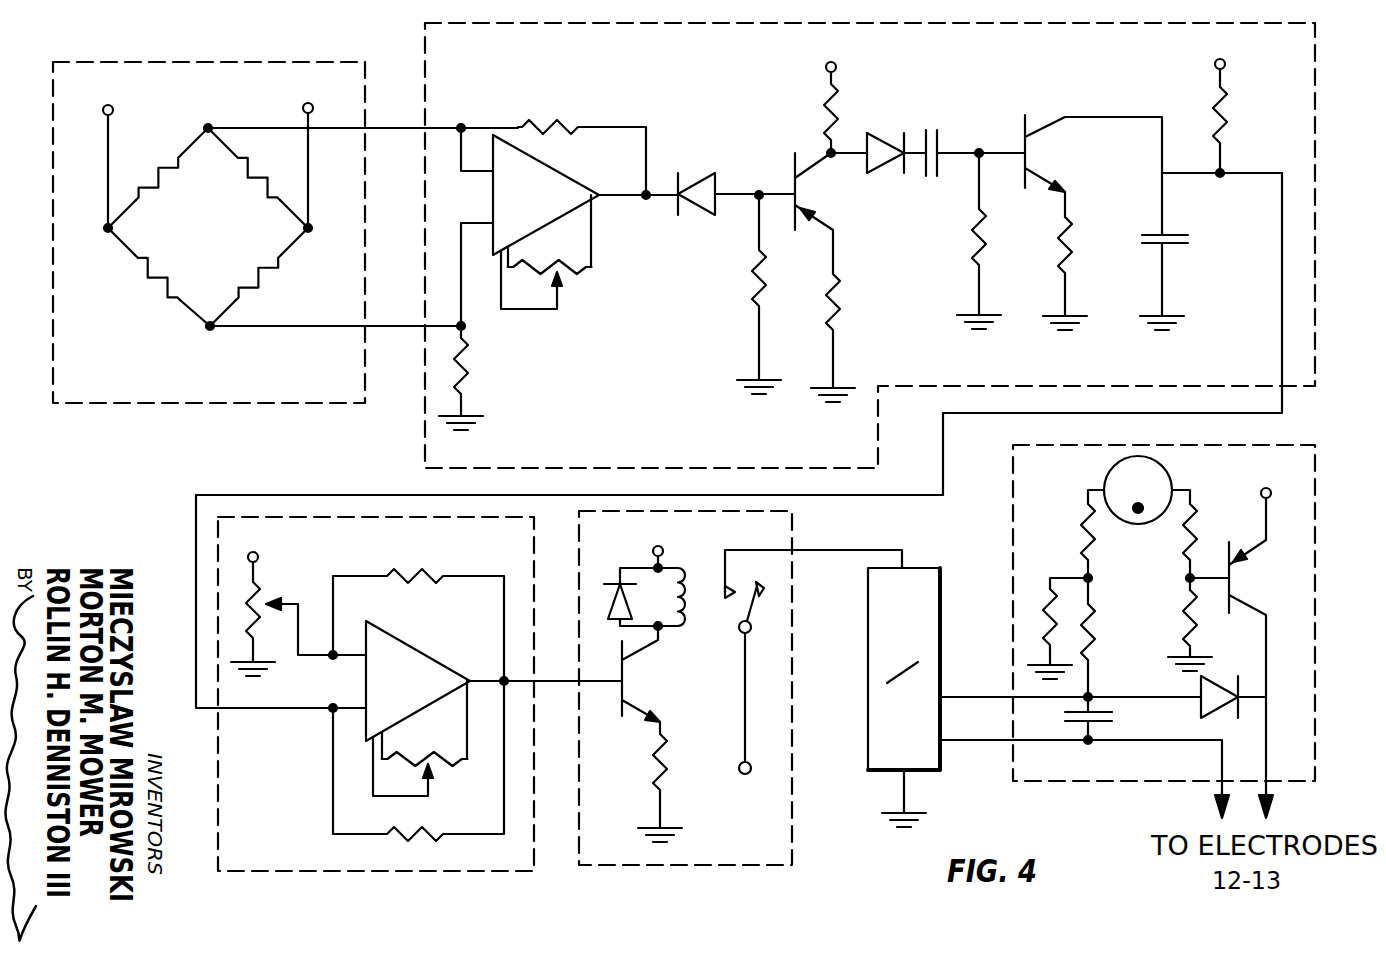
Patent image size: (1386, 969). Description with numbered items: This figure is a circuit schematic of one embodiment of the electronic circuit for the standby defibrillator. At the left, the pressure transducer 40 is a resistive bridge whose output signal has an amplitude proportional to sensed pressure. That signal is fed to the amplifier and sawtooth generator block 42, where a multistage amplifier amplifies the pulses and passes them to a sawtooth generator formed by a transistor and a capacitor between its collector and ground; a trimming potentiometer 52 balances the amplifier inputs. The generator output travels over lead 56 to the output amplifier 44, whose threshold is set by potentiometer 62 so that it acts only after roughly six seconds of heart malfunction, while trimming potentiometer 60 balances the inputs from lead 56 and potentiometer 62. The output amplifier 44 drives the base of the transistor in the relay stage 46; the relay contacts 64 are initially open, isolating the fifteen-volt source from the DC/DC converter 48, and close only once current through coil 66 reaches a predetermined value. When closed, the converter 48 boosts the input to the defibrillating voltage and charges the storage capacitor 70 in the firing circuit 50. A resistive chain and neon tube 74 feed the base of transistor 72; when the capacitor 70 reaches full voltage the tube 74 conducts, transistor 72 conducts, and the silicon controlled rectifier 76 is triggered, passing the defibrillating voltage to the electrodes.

The pressure transducer 40 is at (212, 62).
The amplifier and sawtooth generator block 42 is at (870, 234).
The output amplifier 44 is at (420, 713).
The relay stage 46 is at (740, 688).
The DC/DC converter 48 is at (940, 608).
The firing circuit 50 is at (1127, 633).
The trimming potentiometer 52 is at (572, 282).
The lead 56 is at (1282, 247).
The trimming potentiometer 60 is at (446, 777).
The threshold potentiometer 62 is at (280, 573).
The relay contacts 64 is at (758, 607).
The relay coil 66 is at (693, 627).
The storage capacitor 70 is at (1112, 722).
The transistor 72 is at (1252, 573).
The neon tube 74 is at (1105, 470).
The silicon controlled rectifier 76 is at (1220, 673).